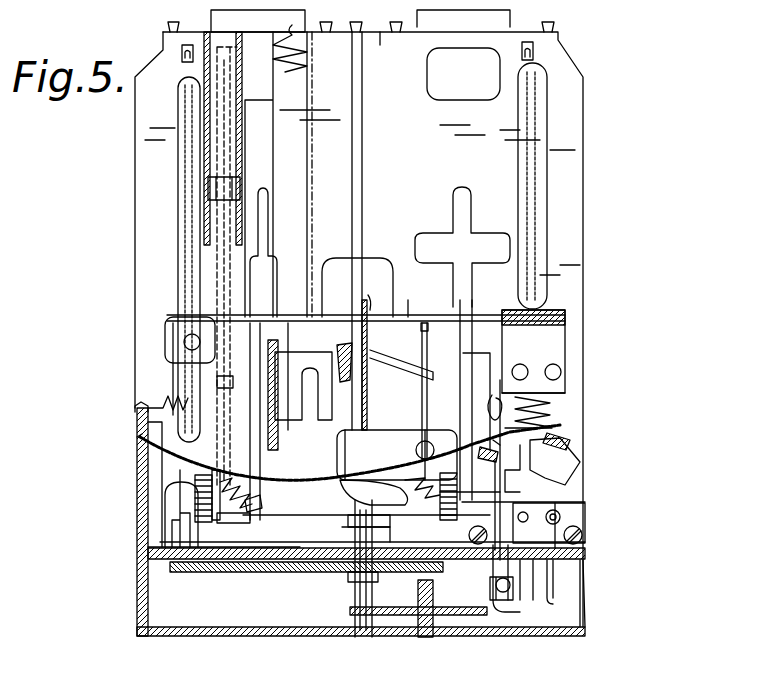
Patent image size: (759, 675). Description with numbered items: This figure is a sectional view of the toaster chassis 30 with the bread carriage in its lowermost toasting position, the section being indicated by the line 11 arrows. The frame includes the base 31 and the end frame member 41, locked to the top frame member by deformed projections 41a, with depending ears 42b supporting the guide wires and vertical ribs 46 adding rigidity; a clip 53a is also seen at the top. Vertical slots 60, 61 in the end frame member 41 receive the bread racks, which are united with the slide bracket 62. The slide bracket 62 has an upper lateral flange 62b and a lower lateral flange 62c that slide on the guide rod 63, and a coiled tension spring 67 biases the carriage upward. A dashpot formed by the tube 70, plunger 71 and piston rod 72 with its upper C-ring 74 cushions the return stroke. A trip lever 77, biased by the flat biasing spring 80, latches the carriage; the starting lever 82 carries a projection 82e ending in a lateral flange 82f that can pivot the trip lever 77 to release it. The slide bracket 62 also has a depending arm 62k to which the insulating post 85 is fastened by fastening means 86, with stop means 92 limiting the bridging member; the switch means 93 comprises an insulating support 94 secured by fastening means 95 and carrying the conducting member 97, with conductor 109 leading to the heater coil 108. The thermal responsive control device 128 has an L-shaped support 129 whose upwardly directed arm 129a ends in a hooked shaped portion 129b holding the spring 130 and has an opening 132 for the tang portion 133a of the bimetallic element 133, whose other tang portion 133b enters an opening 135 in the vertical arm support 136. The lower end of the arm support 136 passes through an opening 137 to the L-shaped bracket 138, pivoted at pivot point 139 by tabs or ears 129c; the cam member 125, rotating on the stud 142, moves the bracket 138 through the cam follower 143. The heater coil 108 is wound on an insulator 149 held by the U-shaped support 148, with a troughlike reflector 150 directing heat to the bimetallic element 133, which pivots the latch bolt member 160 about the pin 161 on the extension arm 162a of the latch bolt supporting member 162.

The end frame member 41 is at (567, 152).
The projection 41a is at (168, 28).
The depending ears 42b is at (380, 36).
The clip 53a is at (184, 62).
The vertical ribs 46 is at (182, 150).
The piston rod 72 is at (225, 283).
The plunger 71 is at (215, 192).
The tube 70 is at (259, 174).
The coiled tension spring 67 is at (306, 60).
The guide rod 63 is at (362, 100).
The starting lever 82 is at (346, 231).
The lateral flange 82f is at (382, 301).
The vertical slot 61 is at (466, 278).
The slide bracket 62 is at (291, 313).
The upper lateral flange 62b is at (409, 308).
The vertical slot 60 is at (366, 417).
The C-ring 74 is at (190, 340).
The latch bolt supporting member 162 is at (290, 360).
The projection 82e is at (368, 357).
The biasing spring 80 is at (392, 372).
The trip lever 77 is at (428, 333).
The extension arm 162a is at (463, 425).
The latch bolt member 160 is at (379, 440).
The pin 161 is at (416, 456).
The thermal responsive control device 128 is at (374, 492).
The bimetallic element 133 is at (185, 457).
The tang portion 133a is at (137, 438).
The tang portion 133b is at (493, 440).
The L-shaped support 129 is at (148, 553).
The hooked shaped portion 129b is at (137, 407).
The upwardly directed arm 129a is at (148, 482).
The opening 132 is at (147, 462).
The spring 130 is at (175, 398).
The tabs or ears 129c is at (572, 555).
The conductor 109 is at (172, 530).
The U-shaped support 148 is at (207, 520).
The insulator 149 is at (216, 470).
The troughlike reflector 150 is at (353, 528).
The heater coil 108 is at (246, 508).
The lower lateral flange 62c is at (346, 527).
The stud 142 is at (360, 637).
The cam member 125 is at (352, 590).
The L-shaped bracket 138 is at (433, 620).
The opening 137 is at (510, 612).
The cam follower 143 is at (490, 583).
The pivot point 139 is at (544, 589).
The base 31 is at (586, 570).
The depending arm 62k is at (553, 332).
The fastening means 86 is at (553, 364).
The insulating post 85 is at (553, 382).
The opening 135 is at (514, 400).
The switch means 93 is at (570, 438).
The stop means 92 is at (533, 462).
The conducting member 97 is at (563, 480).
The vertical arm support 136 is at (537, 503).
The insulating support 94 is at (578, 518).
The fastening means 95 is at (583, 538).
The chassis 30 is at (131, 262).
The section line 11 is at (137, 623).